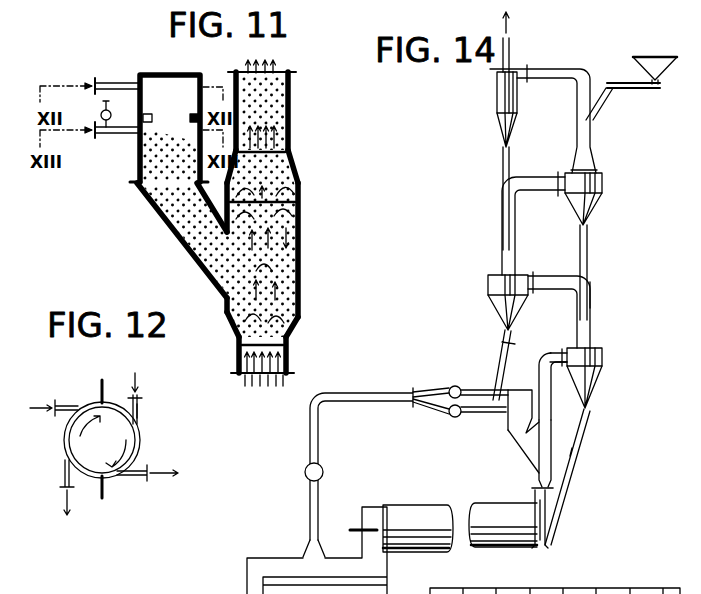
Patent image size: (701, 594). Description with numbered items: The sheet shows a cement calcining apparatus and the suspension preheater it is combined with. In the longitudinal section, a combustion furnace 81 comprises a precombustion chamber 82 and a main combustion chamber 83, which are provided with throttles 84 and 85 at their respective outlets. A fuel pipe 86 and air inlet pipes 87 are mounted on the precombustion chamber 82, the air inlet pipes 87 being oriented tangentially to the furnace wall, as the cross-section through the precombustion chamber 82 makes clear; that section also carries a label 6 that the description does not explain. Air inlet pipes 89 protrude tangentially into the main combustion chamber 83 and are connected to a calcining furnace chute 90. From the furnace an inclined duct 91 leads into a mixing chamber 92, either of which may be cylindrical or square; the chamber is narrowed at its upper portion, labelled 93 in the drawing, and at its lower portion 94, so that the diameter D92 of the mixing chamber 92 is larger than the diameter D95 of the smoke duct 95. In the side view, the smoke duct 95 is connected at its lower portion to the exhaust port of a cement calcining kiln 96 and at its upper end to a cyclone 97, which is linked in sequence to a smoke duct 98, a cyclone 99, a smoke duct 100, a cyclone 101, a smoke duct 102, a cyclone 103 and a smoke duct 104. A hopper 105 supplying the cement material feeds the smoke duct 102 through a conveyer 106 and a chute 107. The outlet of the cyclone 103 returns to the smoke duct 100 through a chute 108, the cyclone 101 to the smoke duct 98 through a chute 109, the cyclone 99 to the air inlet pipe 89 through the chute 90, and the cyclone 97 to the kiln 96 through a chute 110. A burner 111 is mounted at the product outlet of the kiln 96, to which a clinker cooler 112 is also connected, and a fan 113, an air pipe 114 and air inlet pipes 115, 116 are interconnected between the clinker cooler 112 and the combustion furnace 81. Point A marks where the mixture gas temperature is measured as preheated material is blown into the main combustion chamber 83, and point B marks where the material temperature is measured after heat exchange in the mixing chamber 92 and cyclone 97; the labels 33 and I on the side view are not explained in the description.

In FIG. 12, the inlet pipe 6 is at (139, 409).
In FIG. 14, the conduit 33 is at (587, 293).
In FIG. 11, the combustion furnace 81 is at (138, 136).
In FIG. 14, the combustion furnace 81 is at (513, 433).
In FIG. 11, the precombustion chamber 82 is at (152, 79).
In FIG. 12, the precombustion chamber 82 is at (75, 443).
In FIG. 11, the main combustion chamber 83 is at (142, 148).
In FIG. 11, the throttle 84 is at (138, 91).
In FIG. 11, the throttle 85 is at (135, 184).
In FIG. 12, the fuel pipe 86 is at (103, 402).
In FIG. 12, the air inlet pipe 87 is at (74, 402).
In FIG. 14, the air inlet pipe 89 is at (480, 388).
In FIG. 14, the calcining furnace chute 90 is at (500, 343).
In FIG. 11, the inclined duct 91 is at (175, 228).
In FIG. 14, the inclined duct 91 is at (527, 455).
In FIG. 11, the mixing chamber 92 is at (300, 225).
In FIG. 14, the mixing chamber 92 is at (546, 436).
In FIG. 11, the transition section 93 is at (298, 172).
In FIG. 11, the lower portion 94 is at (223, 312).
In FIG. 11, the smoke duct 95 is at (272, 113).
In FIG. 14, the smoke duct 95 is at (542, 356).
In FIG. 14, the cement calcining kiln 96 is at (418, 511).
In FIG. 14, the cyclone 97 is at (602, 375).
In FIG. 14, the smoke duct 98 is at (548, 277).
In FIG. 14, the cyclone 99 is at (488, 285).
In FIG. 14, the smoke duct 100 is at (537, 173).
In FIG. 14, the cyclone 101 is at (602, 181).
In FIG. 14, the smoke duct 102 is at (568, 69).
In FIG. 14, the cyclone 103 is at (497, 98).
In FIG. 14, the smoke duct 104 is at (508, 54).
In FIG. 14, the hopper 105 is at (653, 62).
In FIG. 14, the conveyer 106 is at (628, 91).
In FIG. 14, the chute 107 is at (594, 119).
In FIG. 14, the chute 108 is at (505, 157).
In FIG. 14, the chute 109 is at (587, 246).
In FIG. 14, the chute 110 is at (580, 429).
In FIG. 14, the burner 111 is at (352, 526).
In FIG. 14, the clinker cooler 112 is at (283, 557).
In FIG. 14, the fan 113 is at (323, 467).
In FIG. 14, the air pipe 114 is at (368, 393).
In FIG. 14, the air inlet pipe 115 is at (449, 390).
In FIG. 14, the air inlet pipe 116 is at (449, 416).
In FIG. 14, the point A is at (537, 472).
In FIG. 14, the point B is at (574, 453).
In FIG. 11, the diameter of the mixing chamber D92 is at (290, 196).
In FIG. 11, the diameter of the smoke duct D95 is at (272, 140).
In FIG. 14, the interface I is at (548, 517).